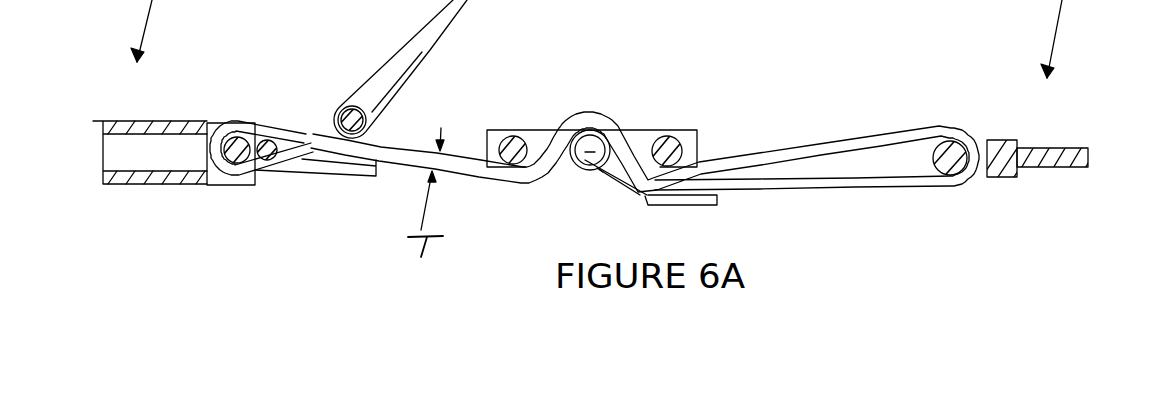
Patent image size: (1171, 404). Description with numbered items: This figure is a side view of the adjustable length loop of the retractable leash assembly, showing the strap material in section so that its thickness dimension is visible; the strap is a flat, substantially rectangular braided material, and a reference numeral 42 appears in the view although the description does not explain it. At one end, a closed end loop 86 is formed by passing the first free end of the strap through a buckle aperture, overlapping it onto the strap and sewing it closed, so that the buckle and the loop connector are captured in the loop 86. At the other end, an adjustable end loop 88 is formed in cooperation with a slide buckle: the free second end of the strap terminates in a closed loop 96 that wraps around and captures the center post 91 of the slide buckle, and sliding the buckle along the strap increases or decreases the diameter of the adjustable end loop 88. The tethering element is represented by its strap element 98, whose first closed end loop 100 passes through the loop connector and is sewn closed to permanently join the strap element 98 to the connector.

The hinge link assembly 42 is at (327, 127).
The closed end loop 86 is at (293, 160).
The adjustable end loop 88 is at (877, 240).
The center post 91 is at (592, 143).
The closed loop 96 is at (600, 166).
The strap element 98 is at (473, 0).
The first closed end loop 100 is at (367, 100).